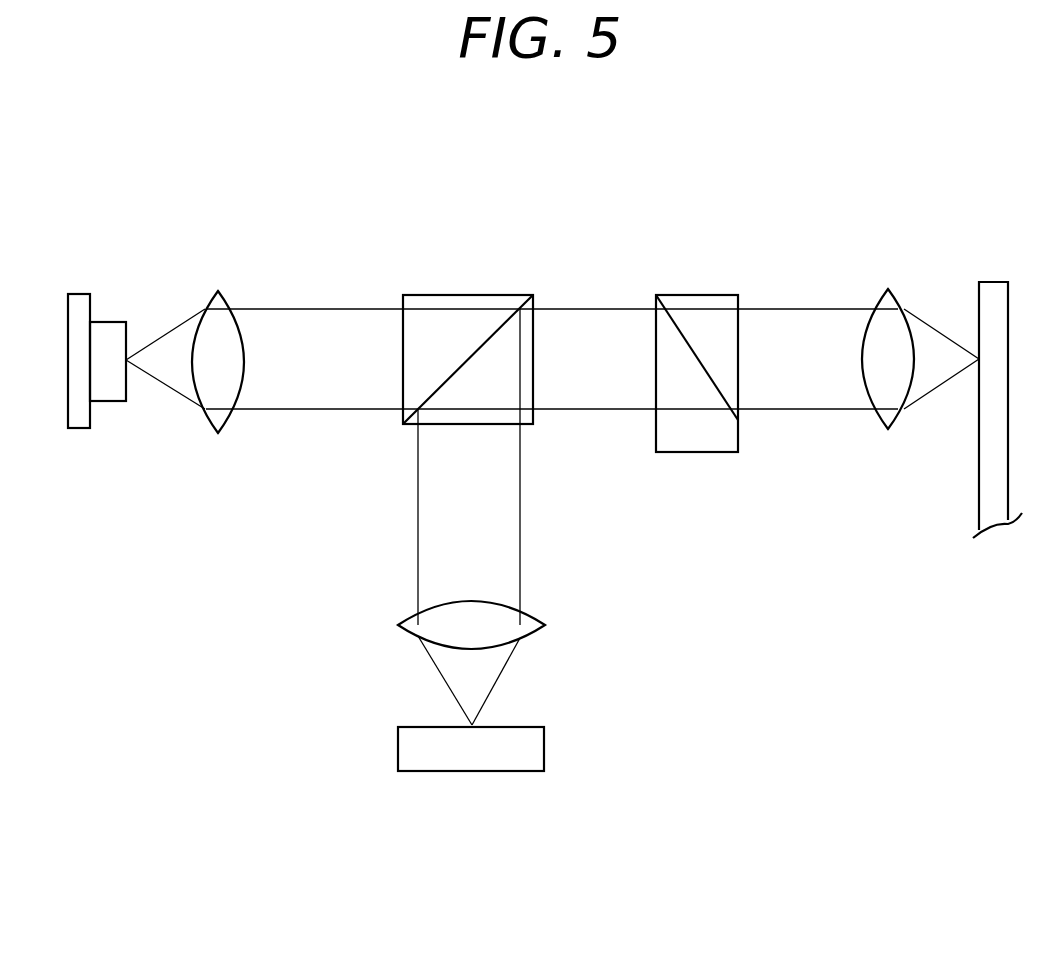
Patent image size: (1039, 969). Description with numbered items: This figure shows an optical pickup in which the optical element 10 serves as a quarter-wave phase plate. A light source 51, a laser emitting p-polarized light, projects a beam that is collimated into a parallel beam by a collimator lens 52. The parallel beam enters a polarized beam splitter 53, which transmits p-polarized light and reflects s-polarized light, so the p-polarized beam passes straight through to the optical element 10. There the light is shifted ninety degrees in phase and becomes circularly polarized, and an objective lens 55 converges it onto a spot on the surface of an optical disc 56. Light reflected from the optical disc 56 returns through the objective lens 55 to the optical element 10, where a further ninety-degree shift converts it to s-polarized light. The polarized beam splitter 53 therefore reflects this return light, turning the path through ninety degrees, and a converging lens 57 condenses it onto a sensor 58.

The optical element 10 is at (690, 295).
The light source 51 is at (77, 294).
The collimator lens 52 is at (220, 291).
The polarized beam splitter 53 is at (485, 295).
The objective lens 55 is at (888, 289).
The optical disc 56 is at (994, 282).
The converging lens 57 is at (530, 630).
The sensor 58 is at (472, 771).